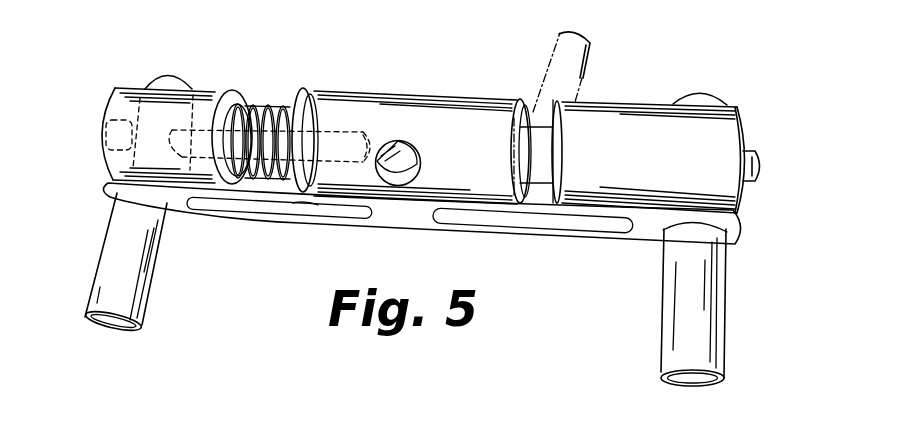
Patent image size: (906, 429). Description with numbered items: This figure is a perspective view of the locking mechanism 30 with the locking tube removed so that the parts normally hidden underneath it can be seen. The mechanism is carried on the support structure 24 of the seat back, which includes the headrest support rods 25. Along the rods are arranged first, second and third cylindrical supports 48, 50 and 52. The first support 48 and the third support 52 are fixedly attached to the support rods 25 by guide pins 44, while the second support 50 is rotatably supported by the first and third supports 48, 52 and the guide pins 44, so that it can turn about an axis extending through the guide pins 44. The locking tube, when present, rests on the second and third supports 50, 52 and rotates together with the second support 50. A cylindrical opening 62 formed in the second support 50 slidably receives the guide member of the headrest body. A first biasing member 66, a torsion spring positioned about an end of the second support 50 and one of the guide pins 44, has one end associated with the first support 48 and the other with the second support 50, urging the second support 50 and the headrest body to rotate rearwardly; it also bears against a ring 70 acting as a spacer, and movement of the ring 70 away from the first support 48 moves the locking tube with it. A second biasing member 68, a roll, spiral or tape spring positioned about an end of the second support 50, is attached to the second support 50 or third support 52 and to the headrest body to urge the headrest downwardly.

The support structure 24 is at (744, 399).
The headrest support rods 25 is at (160, 268).
The locking mechanism 30 is at (226, 50).
The guide pins 44 is at (108, 118).
The first cylindrical support 48 is at (143, 87).
The second cylindrical support 50 is at (415, 93).
The third cylindrical support 52 is at (623, 101).
The cylindrical opening 62 is at (410, 170).
The first biasing member 66 is at (270, 182).
The second biasing member 68 is at (583, 78).
The ring 70 is at (300, 88).